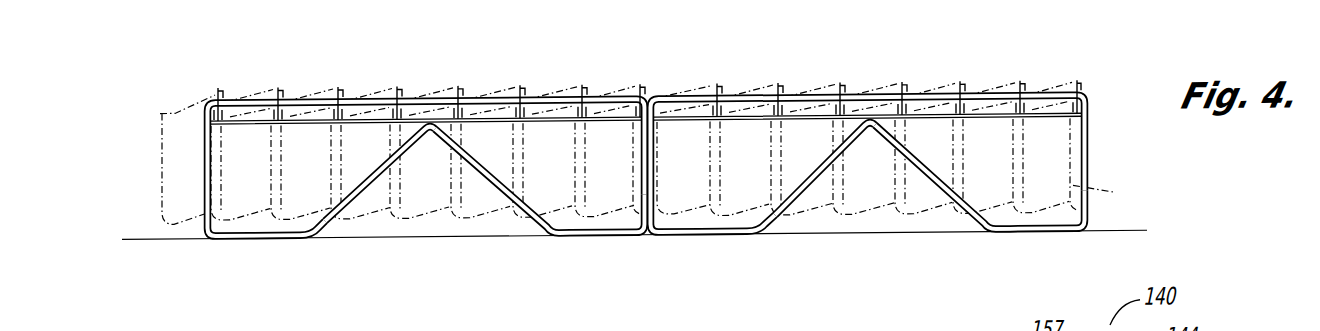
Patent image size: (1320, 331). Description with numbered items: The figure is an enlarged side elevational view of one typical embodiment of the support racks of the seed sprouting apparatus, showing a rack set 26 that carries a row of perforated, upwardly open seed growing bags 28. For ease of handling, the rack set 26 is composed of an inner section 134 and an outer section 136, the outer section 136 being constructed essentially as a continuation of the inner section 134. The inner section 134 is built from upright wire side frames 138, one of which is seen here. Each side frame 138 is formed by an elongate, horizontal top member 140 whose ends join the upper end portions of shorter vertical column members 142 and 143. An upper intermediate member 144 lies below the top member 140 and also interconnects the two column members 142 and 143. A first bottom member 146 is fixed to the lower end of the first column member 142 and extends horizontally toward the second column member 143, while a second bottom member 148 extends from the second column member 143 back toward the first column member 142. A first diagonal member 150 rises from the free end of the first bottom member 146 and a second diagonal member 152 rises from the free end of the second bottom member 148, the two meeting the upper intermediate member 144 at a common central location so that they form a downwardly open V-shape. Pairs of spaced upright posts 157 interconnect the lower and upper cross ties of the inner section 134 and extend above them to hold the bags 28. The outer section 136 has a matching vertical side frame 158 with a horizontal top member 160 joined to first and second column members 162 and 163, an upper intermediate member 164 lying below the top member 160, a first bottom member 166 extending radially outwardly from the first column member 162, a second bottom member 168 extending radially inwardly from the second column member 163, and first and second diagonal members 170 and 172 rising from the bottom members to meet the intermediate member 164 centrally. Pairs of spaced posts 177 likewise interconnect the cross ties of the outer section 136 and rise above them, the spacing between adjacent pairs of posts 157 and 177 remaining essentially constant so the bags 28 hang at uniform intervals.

The rack set 26 is at (668, 52).
The bag 28 is at (178, 113).
The rack inner section 134 is at (394, 149).
The rack outer section 136 is at (901, 142).
The side frame 138 is at (395, 249).
The top member 140 is at (538, 108).
The first column member 142 is at (210, 187).
The second column member 143 is at (643, 206).
The upper intermediate member 144 is at (488, 124).
The first bottom member 146 is at (262, 242).
The second bottom member 148 is at (592, 245).
The first diagonal member 150 is at (348, 238).
The second diagonal member 152 is at (500, 200).
The post 157 is at (278, 91).
The side frame 158 is at (843, 248).
The top member 160 is at (918, 108).
The first column member 162 is at (672, 216).
The second column member 163 is at (1088, 163).
The upper intermediate member 164 is at (1043, 127).
The first bottom member 166 is at (703, 239).
The second bottom member 168 is at (1040, 241).
The first diagonal member 170 is at (800, 207).
The second diagonal member 172 is at (940, 199).
The post 177 is at (790, 119).